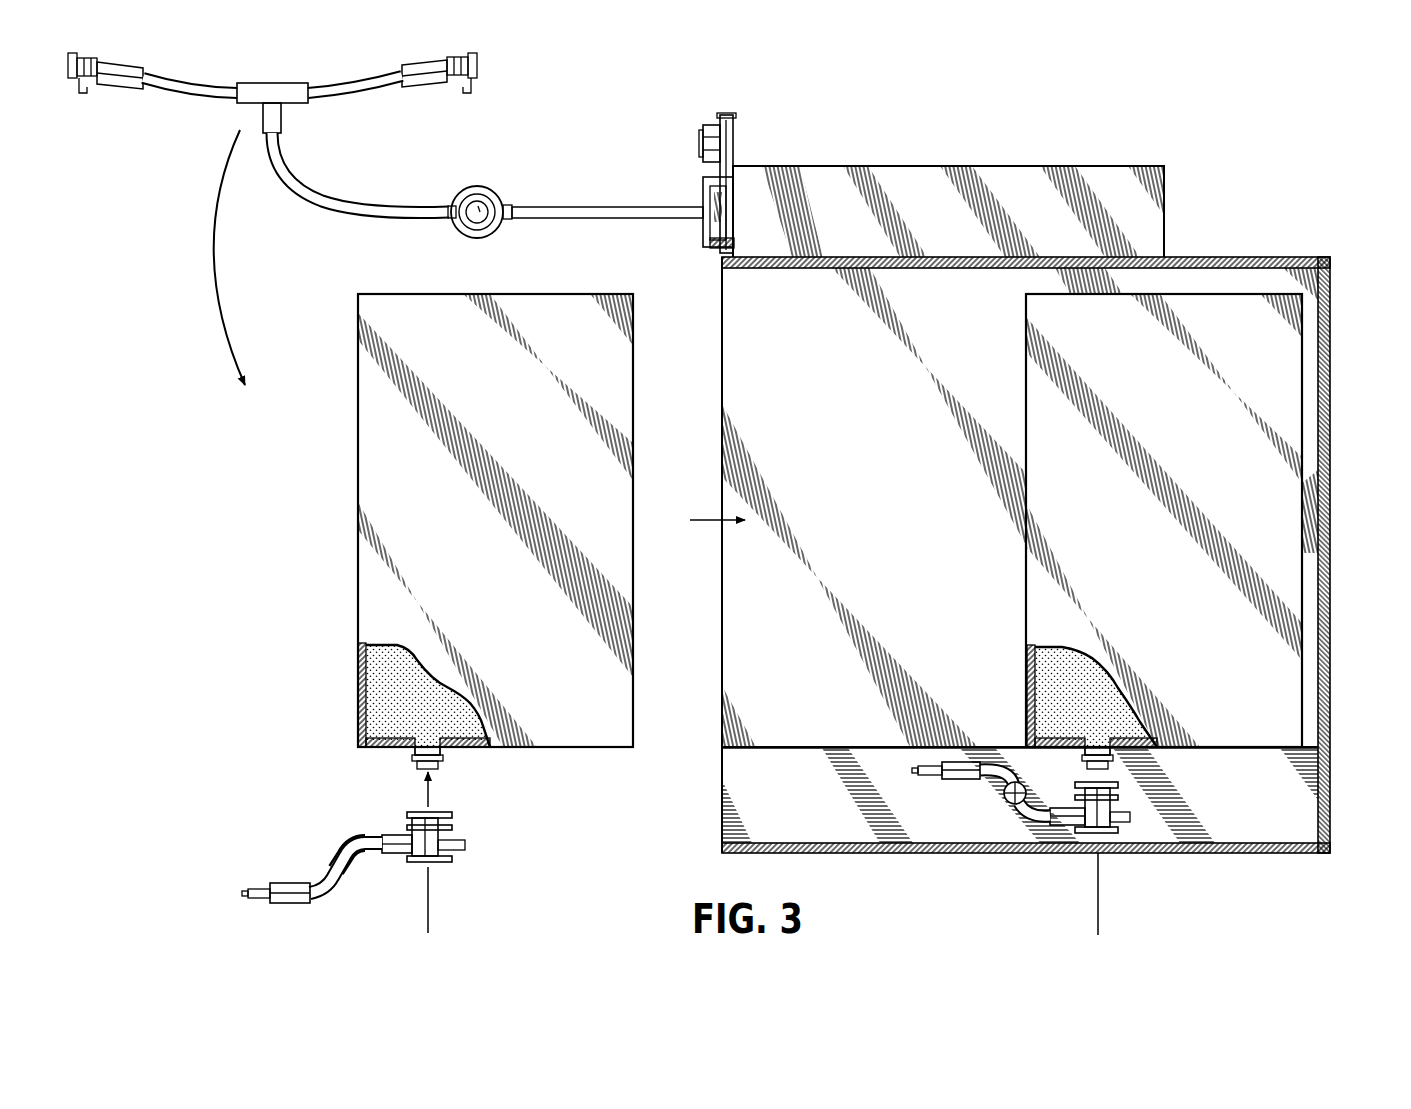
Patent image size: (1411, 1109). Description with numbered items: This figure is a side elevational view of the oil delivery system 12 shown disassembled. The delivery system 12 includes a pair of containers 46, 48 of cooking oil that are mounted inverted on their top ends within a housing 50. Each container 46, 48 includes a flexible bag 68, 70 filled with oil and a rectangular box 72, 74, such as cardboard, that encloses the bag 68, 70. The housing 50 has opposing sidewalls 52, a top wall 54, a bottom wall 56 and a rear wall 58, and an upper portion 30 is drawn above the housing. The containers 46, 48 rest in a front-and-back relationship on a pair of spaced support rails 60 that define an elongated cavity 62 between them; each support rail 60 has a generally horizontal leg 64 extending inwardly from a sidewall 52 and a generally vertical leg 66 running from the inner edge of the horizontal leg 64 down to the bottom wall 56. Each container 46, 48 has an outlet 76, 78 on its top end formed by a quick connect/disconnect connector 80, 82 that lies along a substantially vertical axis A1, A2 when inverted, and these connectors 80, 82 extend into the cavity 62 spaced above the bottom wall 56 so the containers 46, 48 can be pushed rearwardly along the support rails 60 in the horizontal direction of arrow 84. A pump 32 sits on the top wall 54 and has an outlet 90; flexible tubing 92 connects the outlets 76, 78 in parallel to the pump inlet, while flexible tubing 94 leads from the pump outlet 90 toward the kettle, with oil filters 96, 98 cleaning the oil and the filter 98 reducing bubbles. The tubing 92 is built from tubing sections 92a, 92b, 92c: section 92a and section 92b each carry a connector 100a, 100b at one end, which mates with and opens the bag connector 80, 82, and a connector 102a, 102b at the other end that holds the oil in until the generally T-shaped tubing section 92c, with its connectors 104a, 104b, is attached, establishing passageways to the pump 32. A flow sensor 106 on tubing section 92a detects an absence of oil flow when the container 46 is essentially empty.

The delivery system 12 is at (140, 352).
The upper container portion 30 is at (885, 166).
The pump 32 is at (703, 198).
The container 46 is at (356, 432).
The container 48 is at (1025, 363).
The housing 50 is at (1054, 554).
The sidewall 52 is at (812, 340).
The top wall 54 is at (1265, 257).
The bottom wall 56 is at (1252, 855).
The rear wall 58 is at (1331, 465).
The support rail 60 is at (843, 746).
The cavity 62 is at (742, 778).
The horizontal leg 64 is at (795, 746).
The vertical leg 66 is at (830, 817).
The flexible bag 68 is at (357, 692).
The flexible bag 70 is at (1027, 669).
The rectangular box 72 is at (521, 423).
The rectangular box 74 is at (1186, 423).
The outlet 76 is at (452, 762).
The outlet 78 is at (1120, 762).
The quick connect/disconnect connector 80 is at (412, 762).
The quick connect/disconnect connector 82 is at (1082, 759).
The arrow 84 is at (695, 536).
The outlet 90 is at (714, 248).
The flexible tubing 92 is at (566, 190).
The tubing section 92a is at (328, 890).
The tubing section 92b is at (1003, 786).
The tubing section 92c is at (340, 216).
The flexible tubing 94 is at (736, 190).
The oil filter 96 is at (482, 187).
The oil filter 98 is at (703, 142).
The quick connect/disconnect connector 100a is at (440, 823).
The quick connect/disconnect connector 100b is at (1120, 796).
The quick connect/disconnect connector 102a is at (256, 890).
The quick connect/disconnect connector 102b is at (930, 775).
The quick connect/disconnect connector 104a is at (466, 95).
The quick connect/disconnect connector 104b is at (80, 95).
The flow sensor 106 is at (340, 856).
The vertical axis A1 is at (433, 898).
The vertical axis A2 is at (1101, 900).